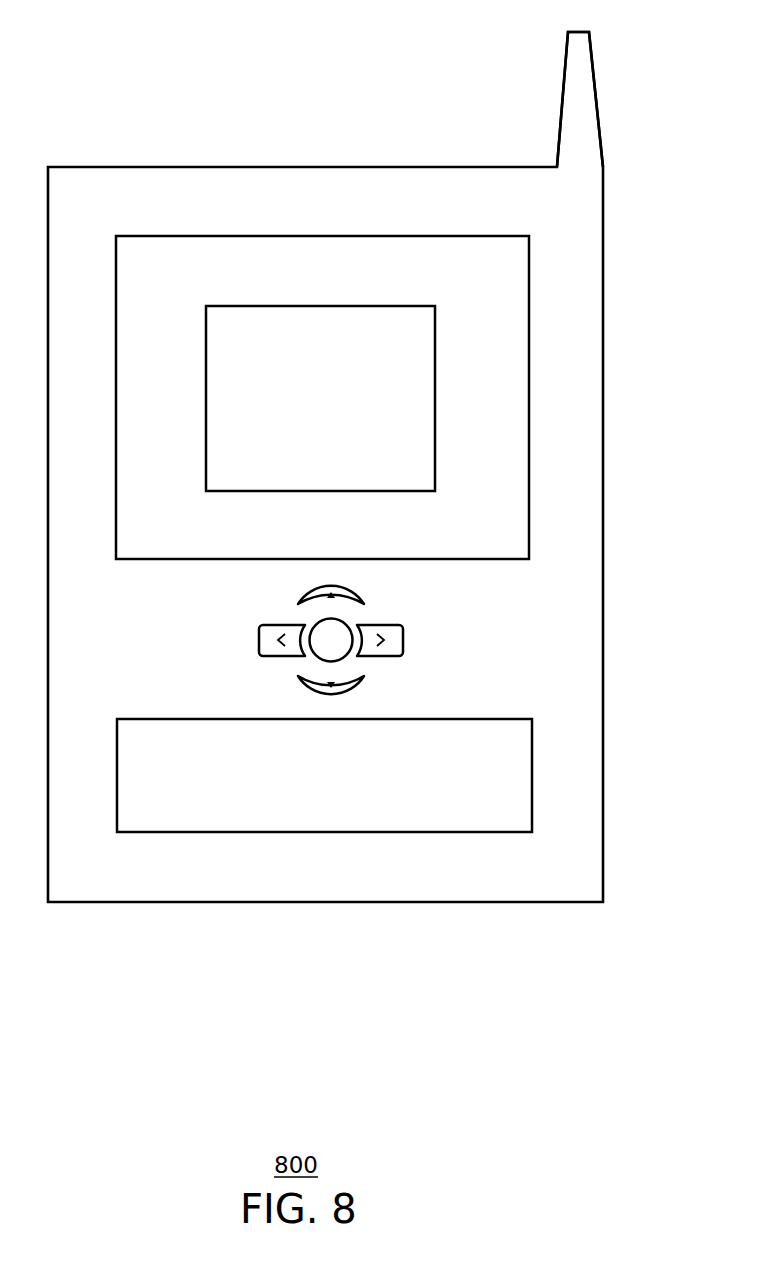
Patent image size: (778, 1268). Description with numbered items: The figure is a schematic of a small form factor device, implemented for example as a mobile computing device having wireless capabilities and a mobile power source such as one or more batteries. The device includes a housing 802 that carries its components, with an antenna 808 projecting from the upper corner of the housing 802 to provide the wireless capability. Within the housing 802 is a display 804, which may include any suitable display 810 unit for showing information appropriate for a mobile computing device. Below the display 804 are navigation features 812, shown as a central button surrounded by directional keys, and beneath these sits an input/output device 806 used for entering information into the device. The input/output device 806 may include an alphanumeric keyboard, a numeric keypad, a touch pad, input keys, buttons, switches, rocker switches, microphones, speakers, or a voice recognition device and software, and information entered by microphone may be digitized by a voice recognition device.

The housing 802 is at (603, 518).
The display 804 is at (468, 236).
The input/output (I/O) device 806 is at (532, 748).
The antenna 808 is at (565, 75).
The display unit 810 is at (380, 306).
The navigation features 812 is at (411, 628).